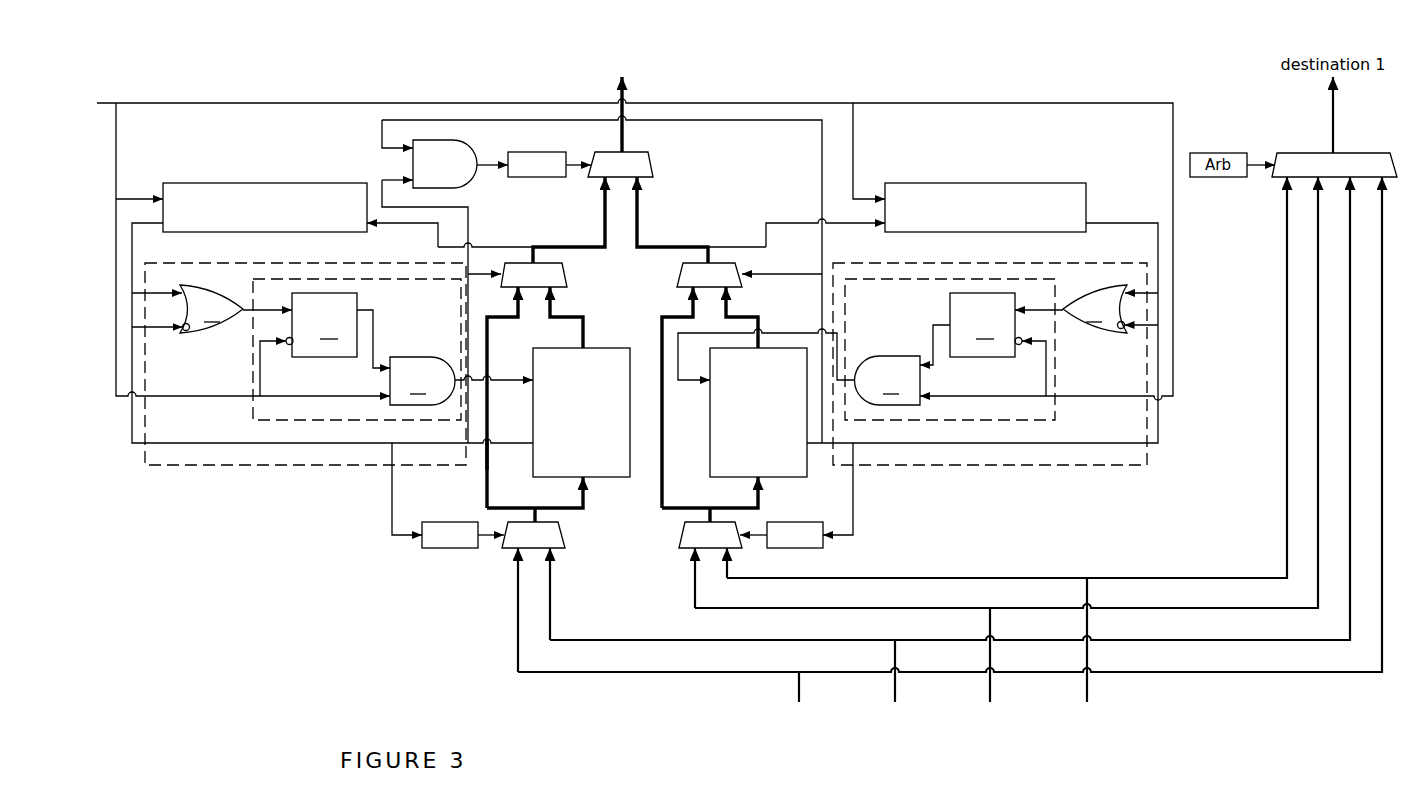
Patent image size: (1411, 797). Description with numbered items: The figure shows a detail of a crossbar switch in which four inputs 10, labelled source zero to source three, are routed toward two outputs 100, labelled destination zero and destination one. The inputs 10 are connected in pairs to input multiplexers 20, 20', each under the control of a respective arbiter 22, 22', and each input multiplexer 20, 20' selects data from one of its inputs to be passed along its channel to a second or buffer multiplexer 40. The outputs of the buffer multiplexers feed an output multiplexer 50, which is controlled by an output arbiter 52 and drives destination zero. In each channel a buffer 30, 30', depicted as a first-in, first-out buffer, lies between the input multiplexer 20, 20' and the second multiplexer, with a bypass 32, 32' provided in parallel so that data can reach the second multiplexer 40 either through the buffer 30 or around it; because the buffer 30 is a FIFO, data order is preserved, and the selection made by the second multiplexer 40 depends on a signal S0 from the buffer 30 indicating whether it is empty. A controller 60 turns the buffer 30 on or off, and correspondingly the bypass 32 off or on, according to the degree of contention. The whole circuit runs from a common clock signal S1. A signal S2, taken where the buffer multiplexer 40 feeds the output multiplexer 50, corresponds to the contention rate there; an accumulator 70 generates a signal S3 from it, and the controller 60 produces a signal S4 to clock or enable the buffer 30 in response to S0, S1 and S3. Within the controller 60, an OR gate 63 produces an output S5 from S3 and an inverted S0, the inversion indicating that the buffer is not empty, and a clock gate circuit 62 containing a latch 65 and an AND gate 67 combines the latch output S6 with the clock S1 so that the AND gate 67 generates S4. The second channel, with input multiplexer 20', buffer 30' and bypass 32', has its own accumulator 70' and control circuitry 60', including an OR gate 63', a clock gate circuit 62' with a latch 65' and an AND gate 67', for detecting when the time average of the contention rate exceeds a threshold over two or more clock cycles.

The inputs 10 is at (745, 713).
The input multiplexer 20 is at (561, 595).
The input multiplexer 20' is at (689, 565).
The arbiter 22 is at (448, 523).
The arbiter 22' is at (823, 504).
The buffer 30 is at (589, 382).
The buffer 30' is at (809, 397).
The bypass 32 is at (452, 408).
The bypass 32' is at (687, 404).
The second multiplexer 40 is at (568, 274).
The output multiplexer 50 is at (658, 161).
The output arbiter 52 is at (522, 150).
The controller 60 is at (305, 398).
The control circuitry 60' is at (990, 386).
The clock gate circuit 62 is at (355, 395).
The clock gate circuit 62' is at (950, 394).
The OR gate 63 is at (211, 309).
The OR gate 63' is at (1095, 309).
The latch 65 is at (308, 344).
The latch 65' is at (998, 344).
The AND gate 67 is at (422, 381).
The AND gate 67' is at (887, 380).
The accumulator 70 is at (265, 190).
The accumulator 70' is at (985, 186).
The outputs 100 is at (700, 62).
The signal S0 is at (500, 447).
The clock signal S1 is at (610, 236).
The signal S2 is at (508, 246).
The signal S3 is at (127, 259).
The signal S4 is at (505, 379).
The output S5 is at (265, 312).
The output S6 is at (381, 331).